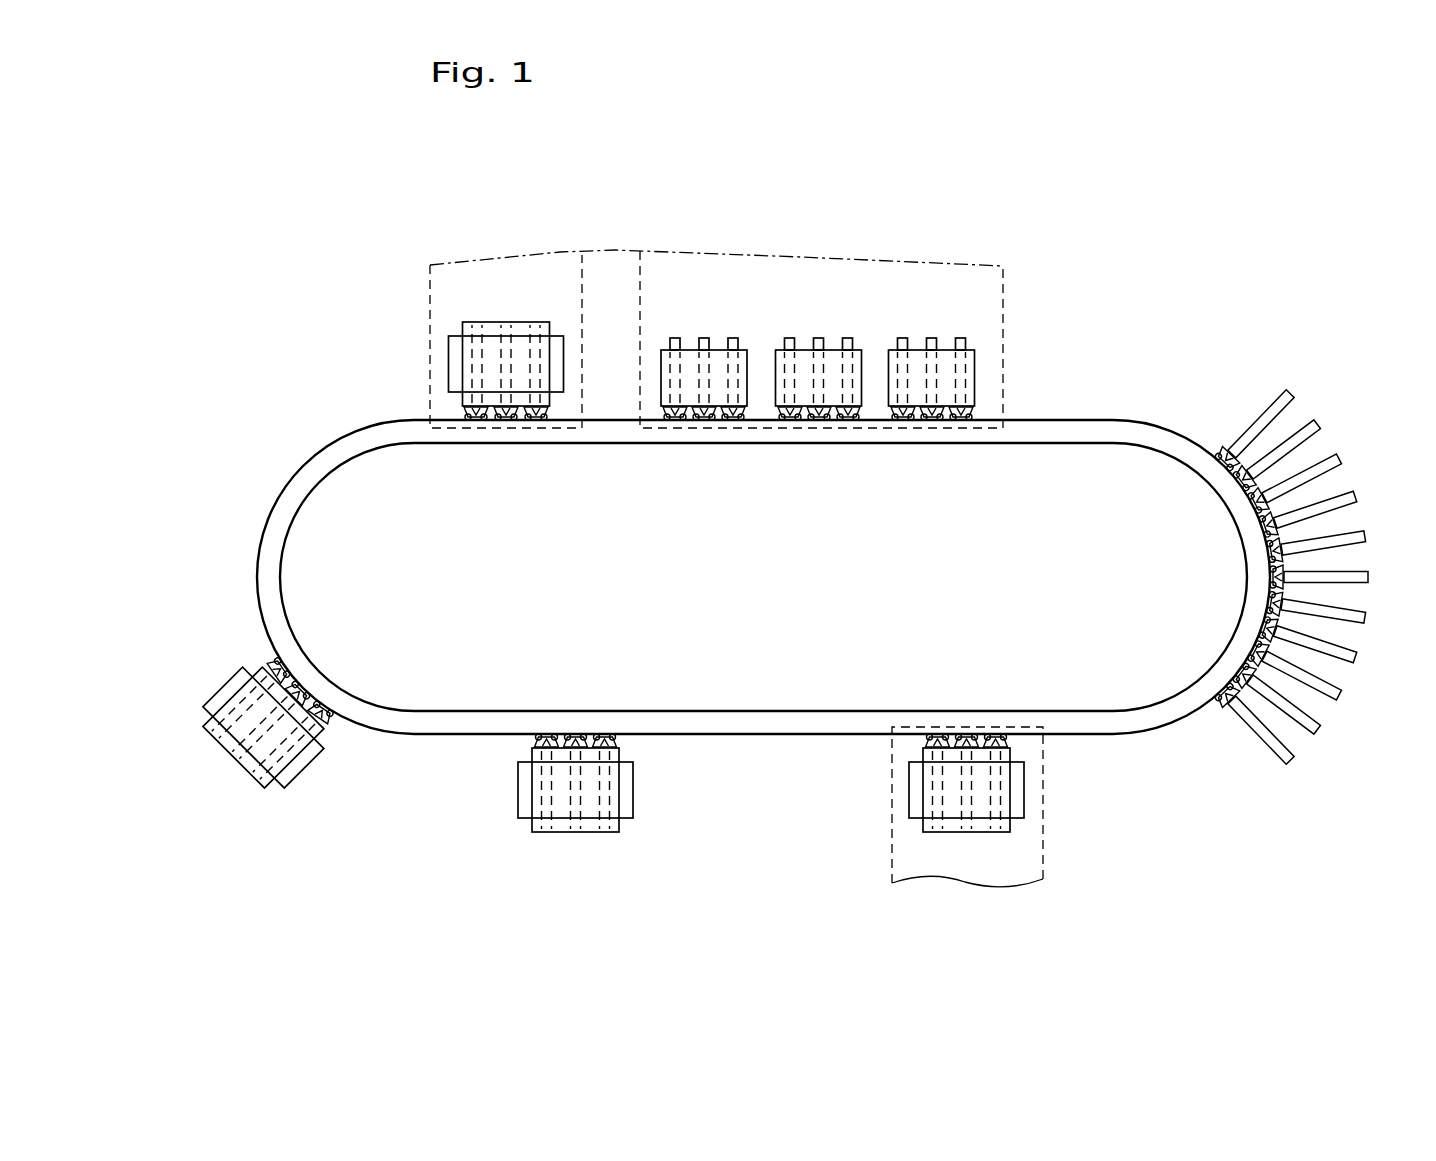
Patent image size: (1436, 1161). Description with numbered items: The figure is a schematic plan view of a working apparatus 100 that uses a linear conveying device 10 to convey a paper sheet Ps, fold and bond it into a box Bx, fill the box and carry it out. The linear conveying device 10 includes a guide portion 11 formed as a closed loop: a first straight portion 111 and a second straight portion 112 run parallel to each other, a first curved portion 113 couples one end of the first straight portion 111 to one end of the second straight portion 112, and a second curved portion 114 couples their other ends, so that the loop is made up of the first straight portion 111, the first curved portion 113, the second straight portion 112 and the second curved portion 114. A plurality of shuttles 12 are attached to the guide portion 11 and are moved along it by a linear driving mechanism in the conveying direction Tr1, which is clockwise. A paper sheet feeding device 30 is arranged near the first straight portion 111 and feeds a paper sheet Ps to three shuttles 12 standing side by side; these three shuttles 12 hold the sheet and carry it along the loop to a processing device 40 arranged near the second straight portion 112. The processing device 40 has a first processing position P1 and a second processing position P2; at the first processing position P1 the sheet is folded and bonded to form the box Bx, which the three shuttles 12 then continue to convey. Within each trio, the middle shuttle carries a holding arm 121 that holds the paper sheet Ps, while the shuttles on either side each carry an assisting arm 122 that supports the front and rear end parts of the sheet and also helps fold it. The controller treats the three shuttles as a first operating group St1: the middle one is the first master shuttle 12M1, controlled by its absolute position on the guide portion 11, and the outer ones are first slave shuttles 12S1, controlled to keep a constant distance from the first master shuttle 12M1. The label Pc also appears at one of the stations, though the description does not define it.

The working apparatus 100 is at (1170, 247).
The linear conveying device 10 is at (1172, 407).
The guide portion 11 is at (298, 453).
The first straight portion 111 is at (765, 737).
The second straight portion 112 is at (1085, 420).
The first curved portion 113 is at (261, 528).
The second curved portion 114 is at (1244, 605).
The shuttle 12 is at (1292, 395).
The first slave shuttle 12S1 is at (476, 422).
The first master shuttle 12M1 is at (506, 422).
The holding arm 121 is at (506, 322).
The assisting arm 122 is at (476, 322).
The paper sheet feeding device 30 is at (1044, 881).
The processing device 40 is at (621, 252).
The first processing position P1 is at (427, 320).
The second processing position P2 is at (1005, 340).
The processing station Pc is at (449, 358).
The paper sheet Ps is at (633, 791).
The first operating group St1 is at (453, 404).
The box Bx is at (748, 340).
The conveying direction Tr1 is at (342, 278).